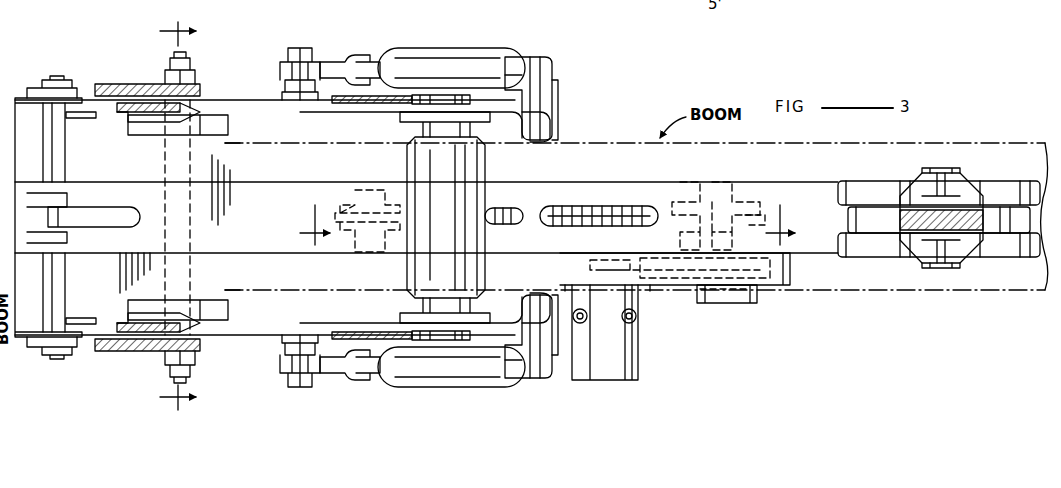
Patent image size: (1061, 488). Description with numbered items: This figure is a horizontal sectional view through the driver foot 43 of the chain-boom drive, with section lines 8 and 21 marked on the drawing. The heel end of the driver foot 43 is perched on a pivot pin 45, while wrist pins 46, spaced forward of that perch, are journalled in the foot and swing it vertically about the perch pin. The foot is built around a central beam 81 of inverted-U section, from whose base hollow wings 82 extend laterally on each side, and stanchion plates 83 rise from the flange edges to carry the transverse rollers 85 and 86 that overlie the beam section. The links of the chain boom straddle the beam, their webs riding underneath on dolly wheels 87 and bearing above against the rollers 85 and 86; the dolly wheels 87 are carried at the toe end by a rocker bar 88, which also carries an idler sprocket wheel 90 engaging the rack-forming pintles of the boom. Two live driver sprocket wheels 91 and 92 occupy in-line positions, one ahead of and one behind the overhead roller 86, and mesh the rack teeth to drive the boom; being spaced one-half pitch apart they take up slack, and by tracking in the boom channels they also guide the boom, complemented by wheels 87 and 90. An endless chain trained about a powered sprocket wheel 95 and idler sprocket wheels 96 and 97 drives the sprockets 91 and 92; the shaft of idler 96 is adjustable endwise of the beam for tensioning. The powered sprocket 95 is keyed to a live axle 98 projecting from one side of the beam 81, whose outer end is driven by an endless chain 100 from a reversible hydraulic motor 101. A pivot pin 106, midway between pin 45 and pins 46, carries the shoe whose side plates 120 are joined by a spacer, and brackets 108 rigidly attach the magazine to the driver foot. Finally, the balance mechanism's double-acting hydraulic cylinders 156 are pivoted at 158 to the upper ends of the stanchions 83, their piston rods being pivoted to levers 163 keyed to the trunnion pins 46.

The section line 8- 8 is at (545, 223).
The section line 21- 21 is at (192, 216).
The driver foot 43 is at (45, 135).
The pivot pin 45 is at (60, 86).
The wrist pins 46 is at (316, 48).
The central beam 81 is at (270, 180).
The hollow wings 82 is at (245, 104).
The stanchion plates 83 is at (330, 102).
The transverse roller 85 is at (425, 165).
The overhead roller 86 is at (560, 134).
The dolly wheels 87 is at (866, 190).
The rocker bar 88 is at (862, 218).
The idler sprocket wheel 90 is at (945, 208).
The live driver sprocket wheel 91 is at (497, 224).
The live driver sprocket wheel 92 is at (600, 210).
The powered sprocket wheel 95 is at (752, 218).
The idler sprocket wheel 96 is at (348, 222).
The idler sprocket wheel 97 is at (678, 195).
The live axle 98 is at (745, 192).
The endless chain 100 is at (676, 286).
The reversible hydraulic motor 101 is at (638, 372).
The pivot pin 106 is at (168, 58).
The brackets 108 is at (122, 86).
The side plates 120 is at (128, 114).
The double-acting hydraulic cylinders 156 is at (466, 62).
The pivot 158 is at (535, 58).
The levers 163 is at (283, 68).